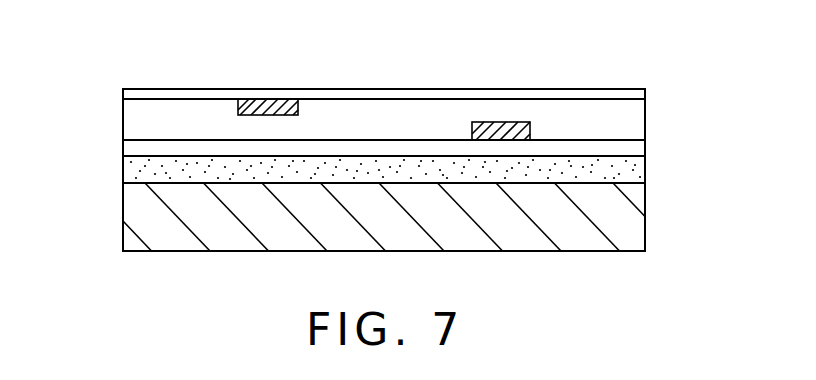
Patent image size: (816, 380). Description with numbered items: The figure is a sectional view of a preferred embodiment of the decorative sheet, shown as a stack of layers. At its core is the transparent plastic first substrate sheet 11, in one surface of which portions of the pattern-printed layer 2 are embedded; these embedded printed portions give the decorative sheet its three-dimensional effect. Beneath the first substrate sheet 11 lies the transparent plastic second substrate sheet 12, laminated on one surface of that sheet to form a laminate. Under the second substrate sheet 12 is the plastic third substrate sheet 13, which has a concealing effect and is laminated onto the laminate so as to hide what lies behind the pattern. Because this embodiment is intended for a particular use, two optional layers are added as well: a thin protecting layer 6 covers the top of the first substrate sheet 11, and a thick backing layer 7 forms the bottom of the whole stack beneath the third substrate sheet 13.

The pattern-printed layer 2 is at (264, 102).
The protecting layer 6 is at (645, 90).
The backing layer 7 is at (637, 224).
The first substrate sheet 11 is at (635, 125).
The second substrate sheet 12 is at (640, 150).
The third substrate sheet 13 is at (640, 170).